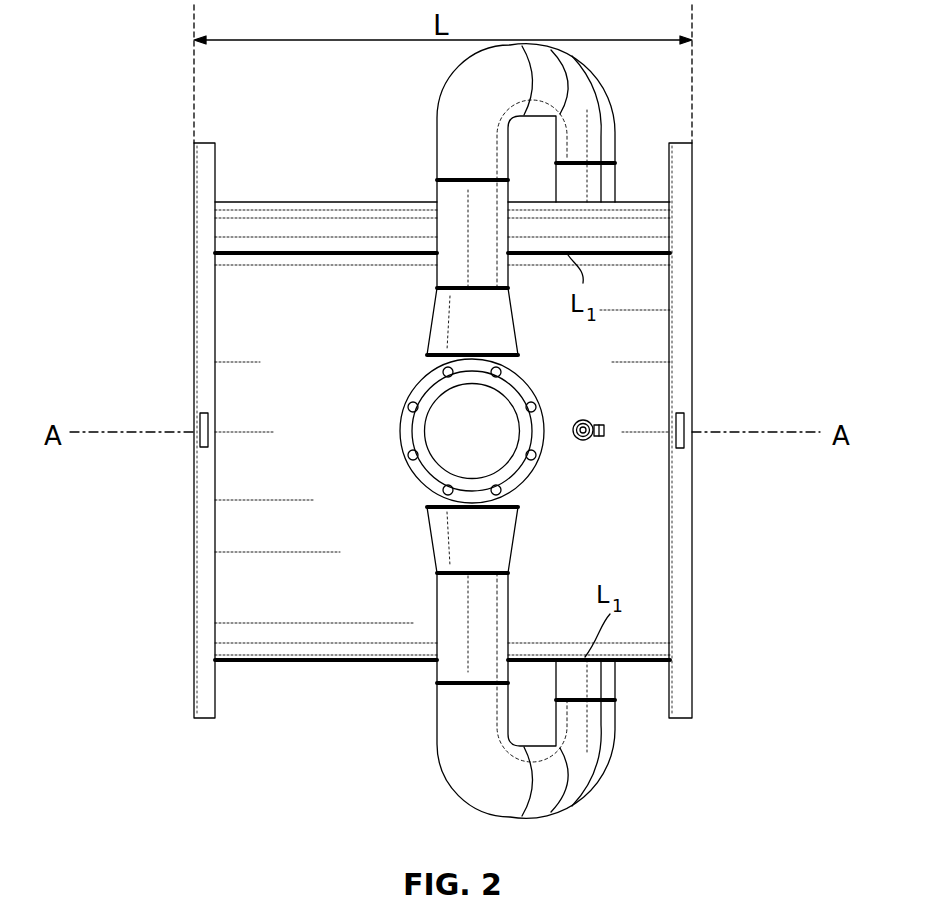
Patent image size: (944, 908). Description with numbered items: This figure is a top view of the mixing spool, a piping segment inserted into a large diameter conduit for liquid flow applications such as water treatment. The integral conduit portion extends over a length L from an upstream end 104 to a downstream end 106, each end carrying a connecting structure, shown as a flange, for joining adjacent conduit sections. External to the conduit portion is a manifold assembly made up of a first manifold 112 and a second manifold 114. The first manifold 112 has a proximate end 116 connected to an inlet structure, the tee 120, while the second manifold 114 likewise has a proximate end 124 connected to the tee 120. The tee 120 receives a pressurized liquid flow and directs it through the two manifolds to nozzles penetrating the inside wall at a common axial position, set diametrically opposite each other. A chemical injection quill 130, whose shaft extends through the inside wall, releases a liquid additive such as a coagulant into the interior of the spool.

The upstream end 104 is at (692, 248).
The downstream end 106 is at (194, 178).
The first manifold 112 is at (432, 721).
The second manifold 114 is at (449, 91).
The proximate end 116 is at (430, 541).
The tee 120 is at (400, 432).
The proximate end 124 is at (430, 326).
The chemical injection quill 130 is at (578, 418).